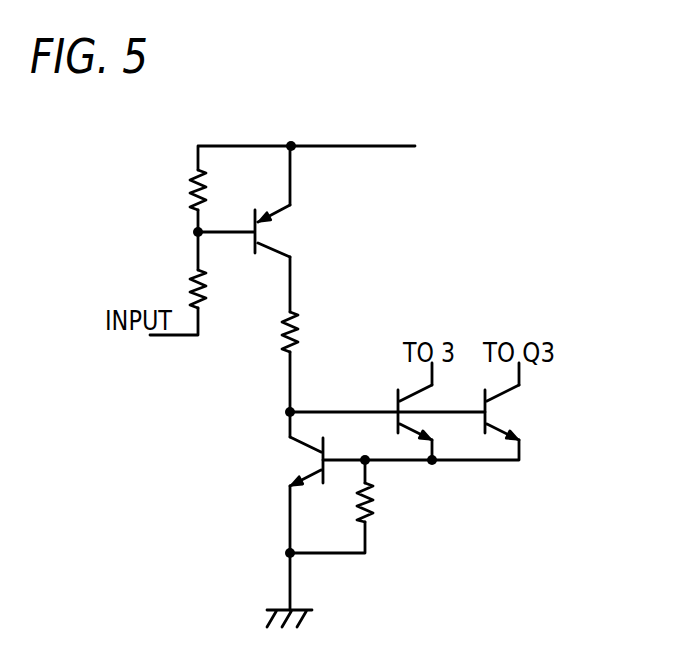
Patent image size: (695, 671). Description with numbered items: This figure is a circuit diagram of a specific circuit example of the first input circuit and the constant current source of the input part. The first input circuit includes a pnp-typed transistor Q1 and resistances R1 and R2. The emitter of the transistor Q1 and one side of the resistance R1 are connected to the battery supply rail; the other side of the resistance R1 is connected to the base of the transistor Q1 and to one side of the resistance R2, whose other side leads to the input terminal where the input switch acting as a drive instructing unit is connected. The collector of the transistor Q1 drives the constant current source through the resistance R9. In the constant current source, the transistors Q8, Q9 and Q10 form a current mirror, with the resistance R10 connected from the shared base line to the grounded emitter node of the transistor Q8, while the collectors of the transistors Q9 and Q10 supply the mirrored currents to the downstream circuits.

The resistance R1 is at (215, 190).
The resistance R2 is at (215, 289).
The resistance R9 is at (308, 332).
The resistance R10 is at (390, 502).
The pnp-typed transistor Q1 is at (255, 231).
The transistor Q8 is at (290, 461).
The transistor Q9 is at (434, 409).
The transistor Q10 is at (527, 409).